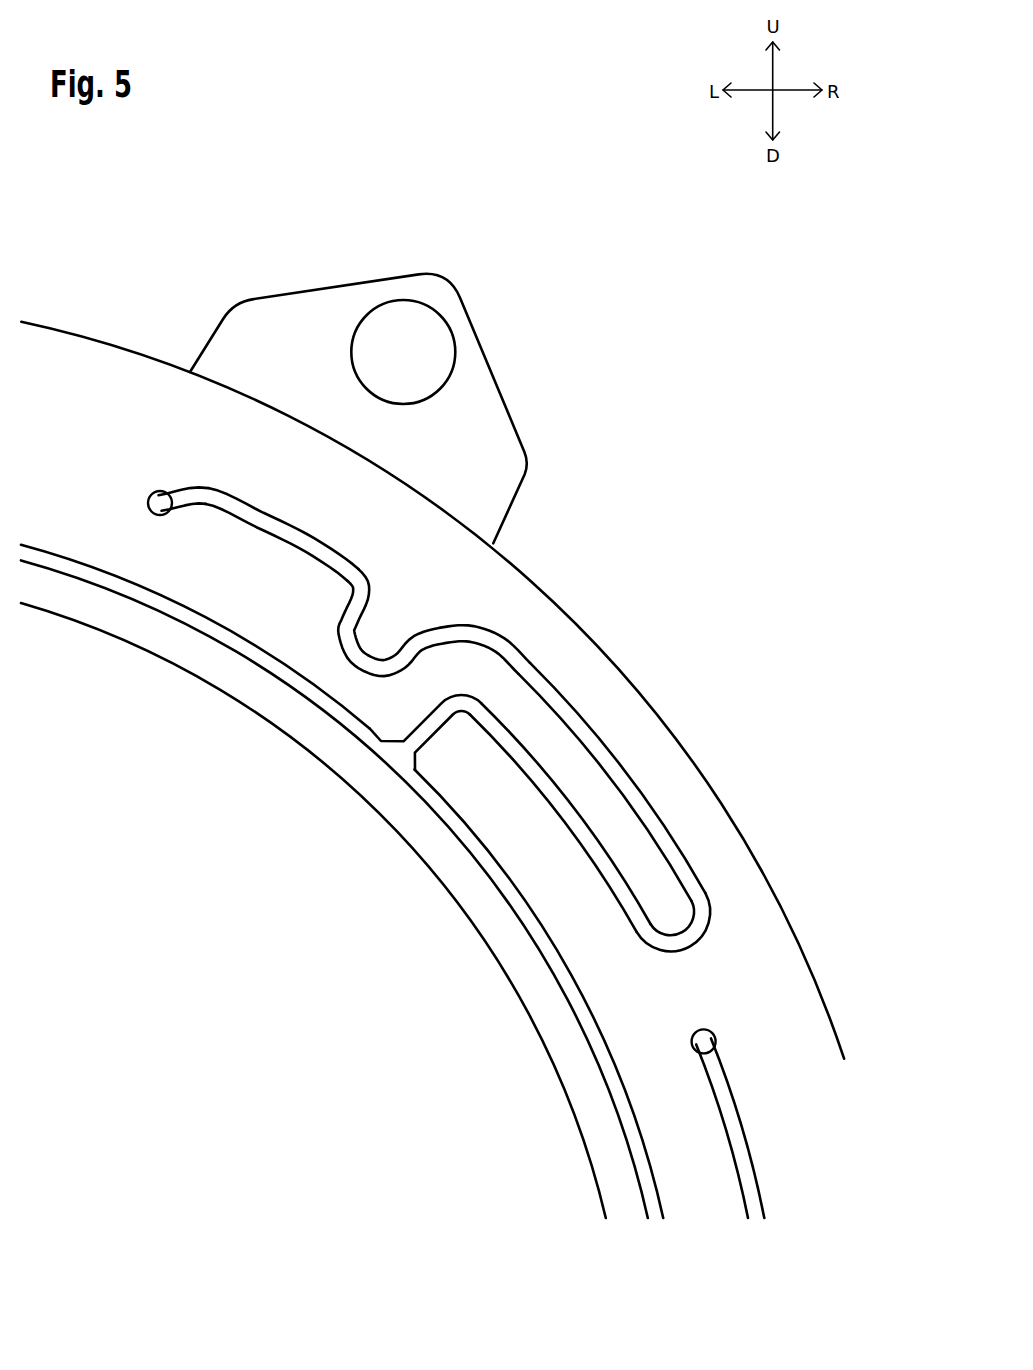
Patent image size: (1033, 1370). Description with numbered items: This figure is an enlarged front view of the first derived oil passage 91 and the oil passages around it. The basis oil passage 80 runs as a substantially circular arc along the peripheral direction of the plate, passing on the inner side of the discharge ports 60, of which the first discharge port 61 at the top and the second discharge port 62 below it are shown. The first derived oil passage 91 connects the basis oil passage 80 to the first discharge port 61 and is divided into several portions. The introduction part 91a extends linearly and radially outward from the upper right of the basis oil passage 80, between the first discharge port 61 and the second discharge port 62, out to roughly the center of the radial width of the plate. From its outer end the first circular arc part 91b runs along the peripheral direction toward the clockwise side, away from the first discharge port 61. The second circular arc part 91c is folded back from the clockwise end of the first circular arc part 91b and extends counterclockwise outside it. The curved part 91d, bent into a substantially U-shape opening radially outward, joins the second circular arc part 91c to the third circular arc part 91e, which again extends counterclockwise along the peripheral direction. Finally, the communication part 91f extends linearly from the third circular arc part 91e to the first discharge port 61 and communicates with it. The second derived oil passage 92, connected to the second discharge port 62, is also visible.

The discharge ports 60 is at (450, 666).
The first discharge port 61 is at (157, 498).
The second discharge port 62 is at (705, 1025).
The basis oil passage 80 is at (247, 656).
The first derived oil passage 91 is at (441, 602).
The introduction part 91a is at (423, 718).
The first circular arc part 91b is at (573, 820).
The second circular arc part 91c is at (604, 757).
The curved part 91d is at (370, 664).
The third circular arc part 91e is at (295, 535).
The communication part 91f is at (193, 498).
The second derived oil passage 92 is at (758, 1133).